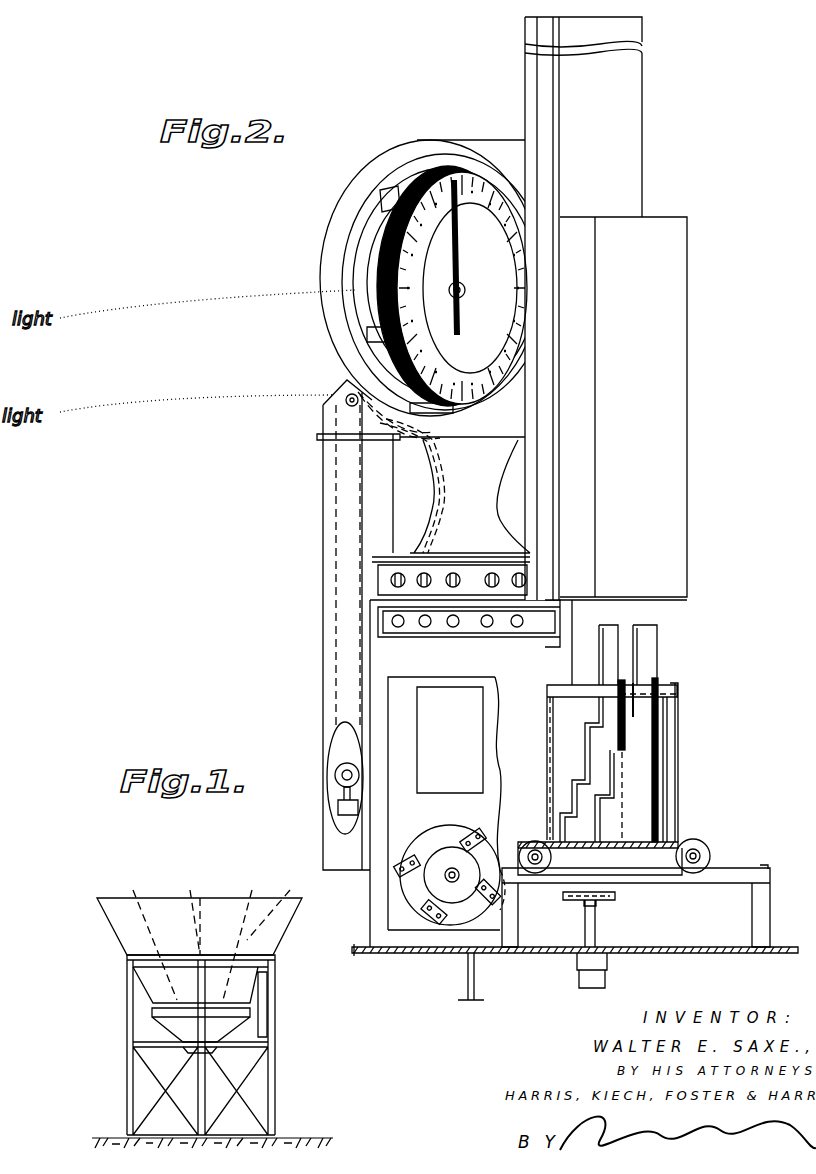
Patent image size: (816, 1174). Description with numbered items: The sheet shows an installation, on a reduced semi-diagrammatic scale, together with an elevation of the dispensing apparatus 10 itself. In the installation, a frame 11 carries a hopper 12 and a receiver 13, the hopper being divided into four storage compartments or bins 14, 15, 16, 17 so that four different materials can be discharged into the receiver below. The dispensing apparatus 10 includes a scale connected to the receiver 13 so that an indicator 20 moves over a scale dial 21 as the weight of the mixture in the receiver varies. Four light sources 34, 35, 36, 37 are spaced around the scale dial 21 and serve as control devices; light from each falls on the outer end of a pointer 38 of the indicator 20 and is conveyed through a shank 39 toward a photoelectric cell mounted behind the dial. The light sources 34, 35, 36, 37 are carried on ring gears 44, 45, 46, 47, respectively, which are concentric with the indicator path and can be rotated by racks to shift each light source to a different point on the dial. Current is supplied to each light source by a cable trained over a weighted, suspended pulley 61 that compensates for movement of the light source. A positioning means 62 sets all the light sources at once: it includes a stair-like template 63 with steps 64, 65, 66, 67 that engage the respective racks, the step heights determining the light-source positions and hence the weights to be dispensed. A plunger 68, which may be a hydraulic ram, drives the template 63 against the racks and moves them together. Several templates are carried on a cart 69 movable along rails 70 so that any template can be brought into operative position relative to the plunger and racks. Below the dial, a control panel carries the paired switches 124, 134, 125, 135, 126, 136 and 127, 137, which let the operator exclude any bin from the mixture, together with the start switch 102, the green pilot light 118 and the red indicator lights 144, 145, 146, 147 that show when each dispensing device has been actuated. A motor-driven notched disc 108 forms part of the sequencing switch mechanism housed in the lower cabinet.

In FIG. 1, the dispensing apparatus 10 is at (271, 994).
In FIG. 1, the frame 11 is at (284, 1069).
In FIG. 1, the hopper 12 is at (233, 892).
In FIG. 1, the receiver 13 is at (240, 1024).
In FIG. 1, the storage compartment 14 is at (152, 934).
In FIG. 1, the storage compartment 15 is at (196, 912).
In FIG. 1, the storage compartment 16 is at (246, 935).
In FIG. 1, the storage compartment 17 is at (276, 905).
In FIG. 2, the indicator 20 is at (462, 176).
In FIG. 2, the scale dial 21 is at (452, 178).
In FIG. 2, the light source 34 is at (445, 165).
In FIG. 2, the light source 35 is at (455, 406).
In FIG. 2, the light source 36 is at (378, 338).
In FIG. 2, the light source 37 is at (380, 222).
In FIG. 2, the pointer 38 is at (462, 272).
In FIG. 2, the shank 39 is at (466, 290).
In FIG. 2, the ring gear 44 is at (365, 362).
In FIG. 2, the ring gear 45 is at (367, 330).
In FIG. 2, the ring gear 46 is at (362, 292).
In FIG. 2, the ring gear 47 is at (382, 195).
In FIG. 2, the pulley 61 is at (336, 780).
In FIG. 2, the positioning means 62 is at (696, 751).
In FIG. 2, the template 63 is at (612, 642).
In FIG. 2, the step 64 is at (591, 769).
In FIG. 2, the step 65 is at (623, 750).
In FIG. 2, the step 66 is at (642, 710).
In FIG. 2, the step 67 is at (658, 622).
In FIG. 2, the plunger 68 is at (596, 926).
In FIG. 2, the cart 69 is at (680, 843).
In FIG. 2, the rails 70 is at (740, 870).
In FIG. 2, the start switch 102 is at (464, 544).
In FIG. 2, the disc 108 is at (412, 912).
In FIG. 2, the pilot light 118 is at (398, 628).
In FIG. 2, the switch 124 is at (331, 593).
In FIG. 2, the switch 125 is at (473, 556).
In FIG. 2, the switch 126 is at (576, 531).
In FIG. 2, the switch 127 is at (591, 557).
In FIG. 2, the switch 134 is at (395, 586).
In FIG. 2, the switch 135 is at (455, 572).
In FIG. 2, the switch 136 is at (500, 575).
In FIG. 2, the switch 137 is at (527, 578).
In FIG. 2, the indicator light 144 is at (425, 628).
In FIG. 2, the indicator light 145 is at (453, 628).
In FIG. 2, the indicator light 146 is at (487, 628).
In FIG. 2, the indicator light 147 is at (517, 628).